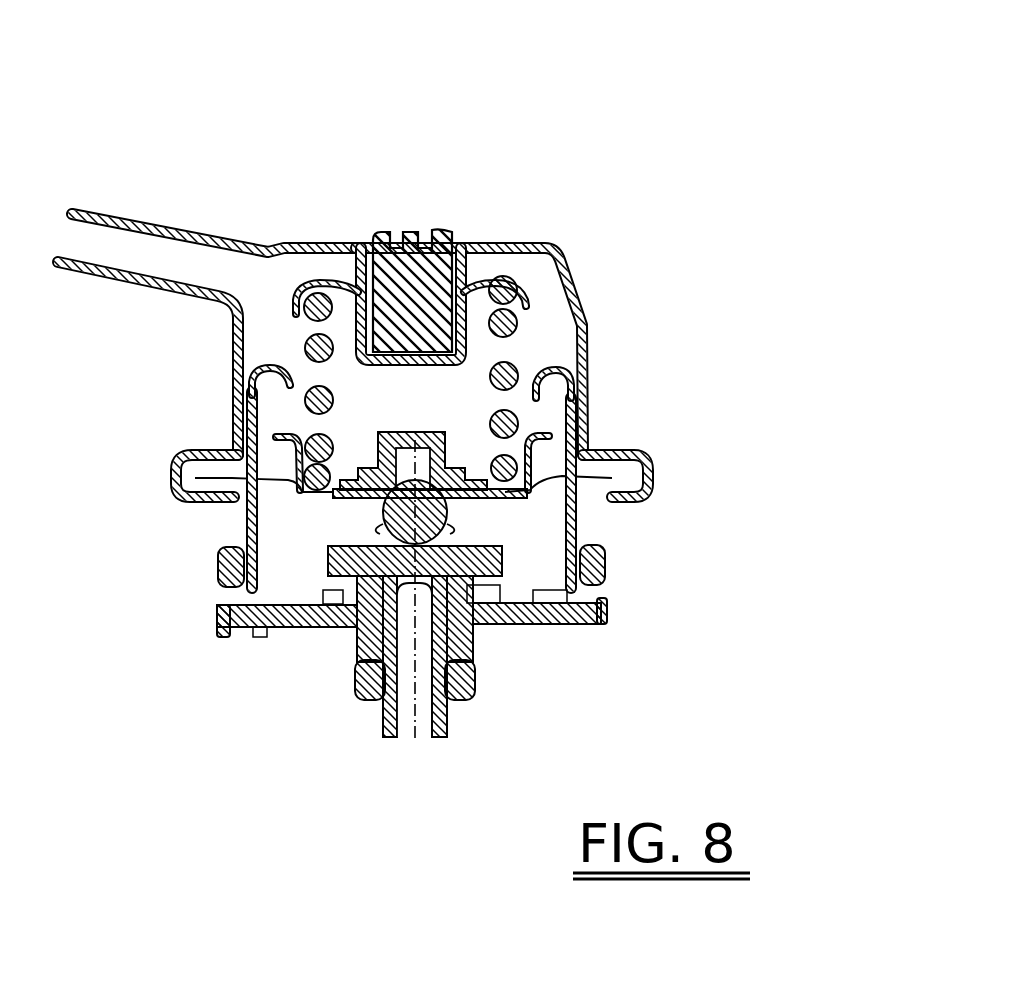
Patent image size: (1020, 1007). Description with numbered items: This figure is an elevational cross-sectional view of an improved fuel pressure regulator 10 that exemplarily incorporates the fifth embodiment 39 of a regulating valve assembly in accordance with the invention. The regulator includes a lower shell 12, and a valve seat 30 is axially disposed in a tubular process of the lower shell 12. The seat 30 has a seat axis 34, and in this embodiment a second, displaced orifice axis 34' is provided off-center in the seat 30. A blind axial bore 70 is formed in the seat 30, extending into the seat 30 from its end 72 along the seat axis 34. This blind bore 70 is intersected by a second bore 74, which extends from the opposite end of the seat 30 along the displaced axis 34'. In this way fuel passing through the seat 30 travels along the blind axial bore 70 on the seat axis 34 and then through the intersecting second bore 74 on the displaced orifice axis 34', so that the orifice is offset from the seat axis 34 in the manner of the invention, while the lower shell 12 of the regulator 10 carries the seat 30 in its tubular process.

The fuel pressure regulator 10 is at (612, 185).
The lower shell 12 is at (217, 539).
The valve seat 30 is at (517, 625).
The seat axis 34 is at (406, 596).
The displaced orifice axis 34' is at (364, 633).
The regulating valve assembly embodiment 39 is at (518, 560).
The blind axial bore 70 is at (358, 688).
The end 72 is at (440, 740).
The second bore 74 is at (345, 573).